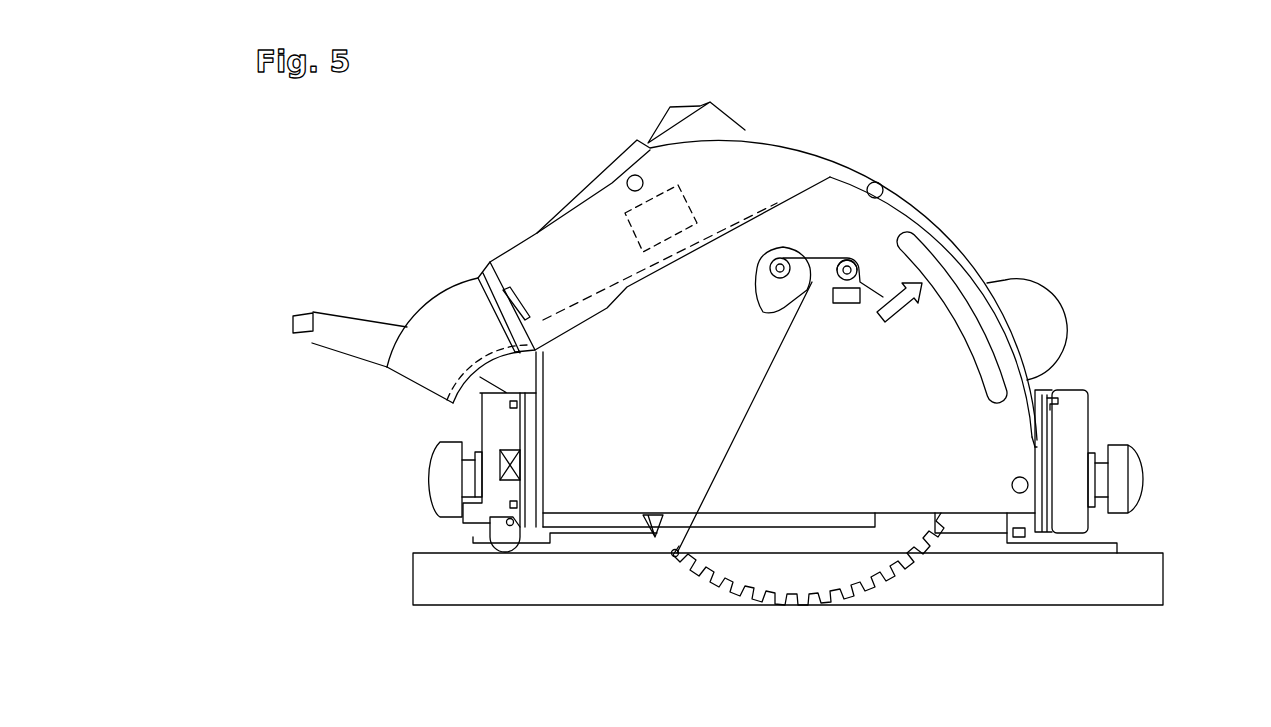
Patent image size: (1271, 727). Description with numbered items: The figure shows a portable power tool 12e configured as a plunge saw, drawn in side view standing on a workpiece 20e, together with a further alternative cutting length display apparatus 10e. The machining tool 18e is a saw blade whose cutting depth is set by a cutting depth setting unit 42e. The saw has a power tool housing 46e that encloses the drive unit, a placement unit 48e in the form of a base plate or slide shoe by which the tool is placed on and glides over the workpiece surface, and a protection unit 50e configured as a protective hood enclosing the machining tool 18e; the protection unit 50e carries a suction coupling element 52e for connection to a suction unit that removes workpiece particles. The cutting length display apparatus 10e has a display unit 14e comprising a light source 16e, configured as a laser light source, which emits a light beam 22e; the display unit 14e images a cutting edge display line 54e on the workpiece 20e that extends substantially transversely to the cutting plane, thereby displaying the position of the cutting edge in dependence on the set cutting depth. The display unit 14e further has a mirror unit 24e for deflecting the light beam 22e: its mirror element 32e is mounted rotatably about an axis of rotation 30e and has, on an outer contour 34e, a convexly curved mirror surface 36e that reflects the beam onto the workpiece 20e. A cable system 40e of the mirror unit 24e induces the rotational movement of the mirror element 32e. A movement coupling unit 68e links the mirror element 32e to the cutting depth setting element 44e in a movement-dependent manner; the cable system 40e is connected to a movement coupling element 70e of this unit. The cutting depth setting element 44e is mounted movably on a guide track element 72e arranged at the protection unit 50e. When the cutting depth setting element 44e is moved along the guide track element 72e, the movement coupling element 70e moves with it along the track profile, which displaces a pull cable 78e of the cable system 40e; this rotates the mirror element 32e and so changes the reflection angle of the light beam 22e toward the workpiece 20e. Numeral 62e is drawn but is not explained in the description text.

The cutting length display apparatus 10e is at (666, 418).
The portable power tool 12e is at (1165, 168).
The display unit 14e is at (883, 240).
The light source 16e is at (847, 303).
The machining tool 18e is at (843, 578).
The workpiece 20e is at (1117, 600).
The light beam 22e is at (733, 437).
The mirror unit 24e is at (729, 297).
The axis of rotation 30e is at (781, 258).
The mirror element 32e is at (763, 300).
The outer contour 34e is at (780, 307).
The mirror surface 36e is at (780, 307).
The cable system 40e is at (867, 230).
The cutting depth setting unit 42e is at (1027, 257).
The cutting depth setting element 44e is at (1063, 330).
The power tool housing 46e is at (702, 150).
The placement unit 48e is at (487, 547).
The protection unit 50e is at (997, 446).
The suction coupling element 52e is at (445, 317).
The cutting edge display line 54e is at (674, 560).
The operating element 62e is at (612, 183).
The movement coupling unit 68e is at (940, 257).
The movement coupling element 70e is at (908, 318).
The guide track element 72e is at (993, 392).
The pull cable 78e is at (822, 257).